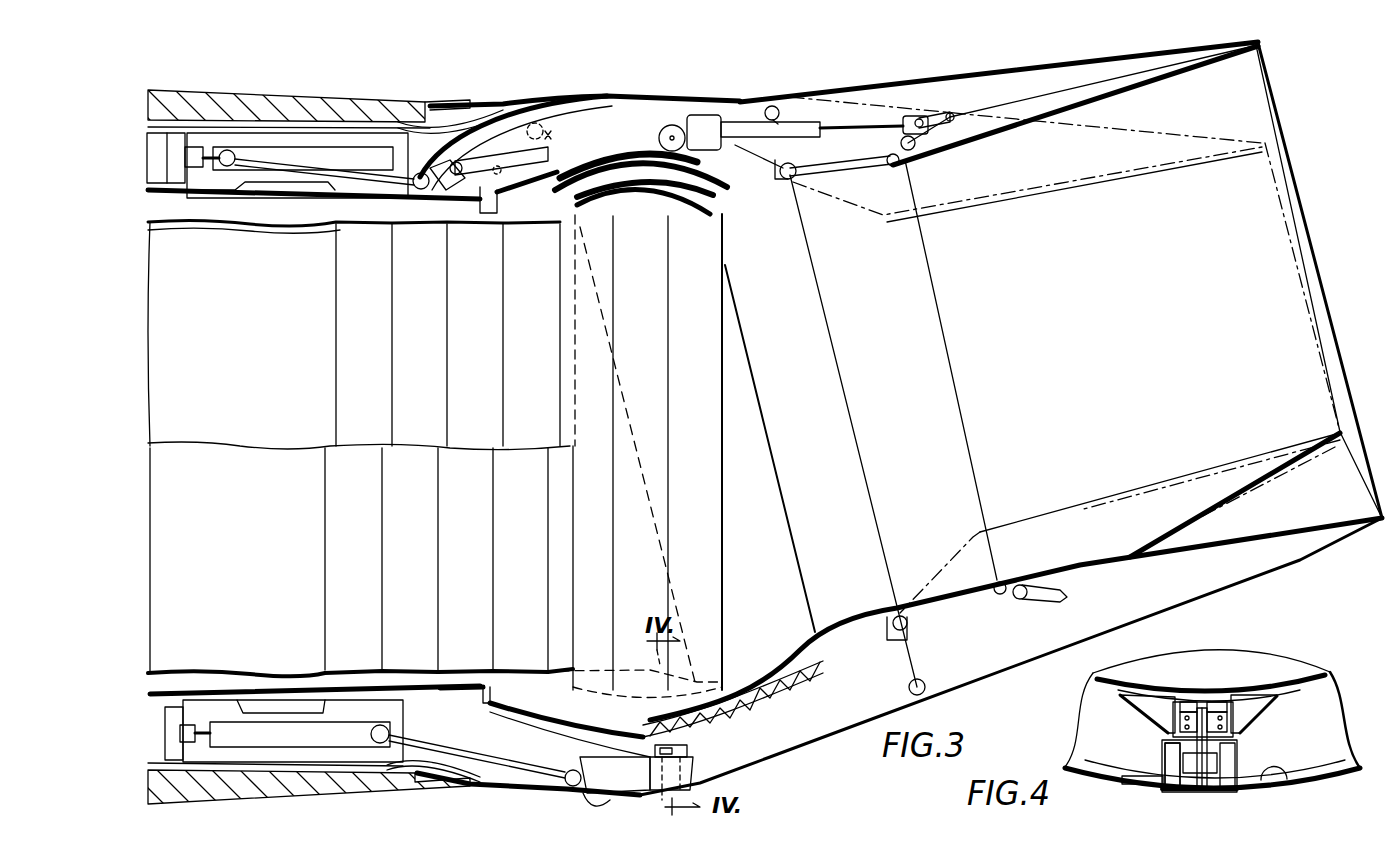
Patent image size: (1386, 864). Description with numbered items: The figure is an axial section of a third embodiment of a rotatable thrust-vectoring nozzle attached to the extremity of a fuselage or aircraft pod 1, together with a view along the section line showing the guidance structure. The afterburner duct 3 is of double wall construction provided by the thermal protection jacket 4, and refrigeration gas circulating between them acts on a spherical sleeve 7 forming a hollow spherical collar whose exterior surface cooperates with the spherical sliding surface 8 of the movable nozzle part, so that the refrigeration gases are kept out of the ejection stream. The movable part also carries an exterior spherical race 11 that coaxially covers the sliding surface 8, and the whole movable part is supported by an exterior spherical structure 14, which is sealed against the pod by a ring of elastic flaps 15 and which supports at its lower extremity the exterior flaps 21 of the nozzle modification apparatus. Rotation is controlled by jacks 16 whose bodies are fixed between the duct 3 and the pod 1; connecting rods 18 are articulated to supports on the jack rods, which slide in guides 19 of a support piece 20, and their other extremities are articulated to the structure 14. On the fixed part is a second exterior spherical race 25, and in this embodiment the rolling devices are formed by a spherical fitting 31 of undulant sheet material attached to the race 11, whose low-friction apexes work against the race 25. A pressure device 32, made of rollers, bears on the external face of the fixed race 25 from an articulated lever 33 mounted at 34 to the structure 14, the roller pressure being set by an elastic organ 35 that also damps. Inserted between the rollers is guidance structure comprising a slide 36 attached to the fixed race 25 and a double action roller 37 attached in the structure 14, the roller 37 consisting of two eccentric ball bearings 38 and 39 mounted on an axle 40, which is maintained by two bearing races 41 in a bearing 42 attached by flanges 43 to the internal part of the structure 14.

In FIG. 3, the fuselage or aircraft pod 1 is at (330, 92).
In FIG. 3, the afterburner duct 3 is at (207, 195).
In FIG. 3, the thermal protection jacket 4 is at (232, 222).
In FIG. 3, the spherical sleeve 7 is at (627, 443).
In FIG. 3, the spherical sliding surface 8 is at (772, 676).
In FIG. 3, the exterior spherical race 11 is at (740, 130).
In FIG. 3, the exterior spherical structure 14 is at (668, 100).
In FIG. 4, the exterior spherical structure 14 is at (1072, 770).
In FIG. 3, the elastic flaps 15 is at (607, 790).
In FIG. 3, the jacks 16 is at (160, 190).
In FIG. 3, the connecting rods 18 is at (347, 175).
In FIG. 3, the guides 19 is at (345, 152).
In FIG. 3, the support piece 20 is at (385, 133).
In FIG. 3, the exterior flaps 21 is at (925, 78).
In FIG. 3, the exterior spherical race of the fixed part 25 is at (628, 92).
In FIG. 4, the exterior spherical race of the fixed part 25 is at (1170, 705).
In FIG. 3, the spherical fitting 31 is at (545, 197).
In FIG. 3, the pressure device 32 is at (482, 178).
In FIG. 3, the articulated lever 33 is at (573, 125).
In FIG. 3, the mounting point of the lever 34 is at (458, 165).
In FIG. 3, the elastic organ 35 is at (555, 120).
In FIG. 3, the slide 36 is at (592, 732).
In FIG. 4, the slide 36 is at (1252, 712).
In FIG. 3, the double action roller 37 is at (700, 764).
In FIG. 4, the double action roller 37 is at (1145, 757).
In FIG. 4, the eccentric ball bearing 38 is at (1262, 712).
In FIG. 4, the eccentric ball bearing 39 is at (1222, 734).
In FIG. 4, the axle 40 is at (1205, 760).
In FIG. 4, the bearing races 41 is at (1195, 747).
In FIG. 4, the bearing 42 is at (1177, 773).
In FIG. 4, the flanges 43 is at (1287, 779).